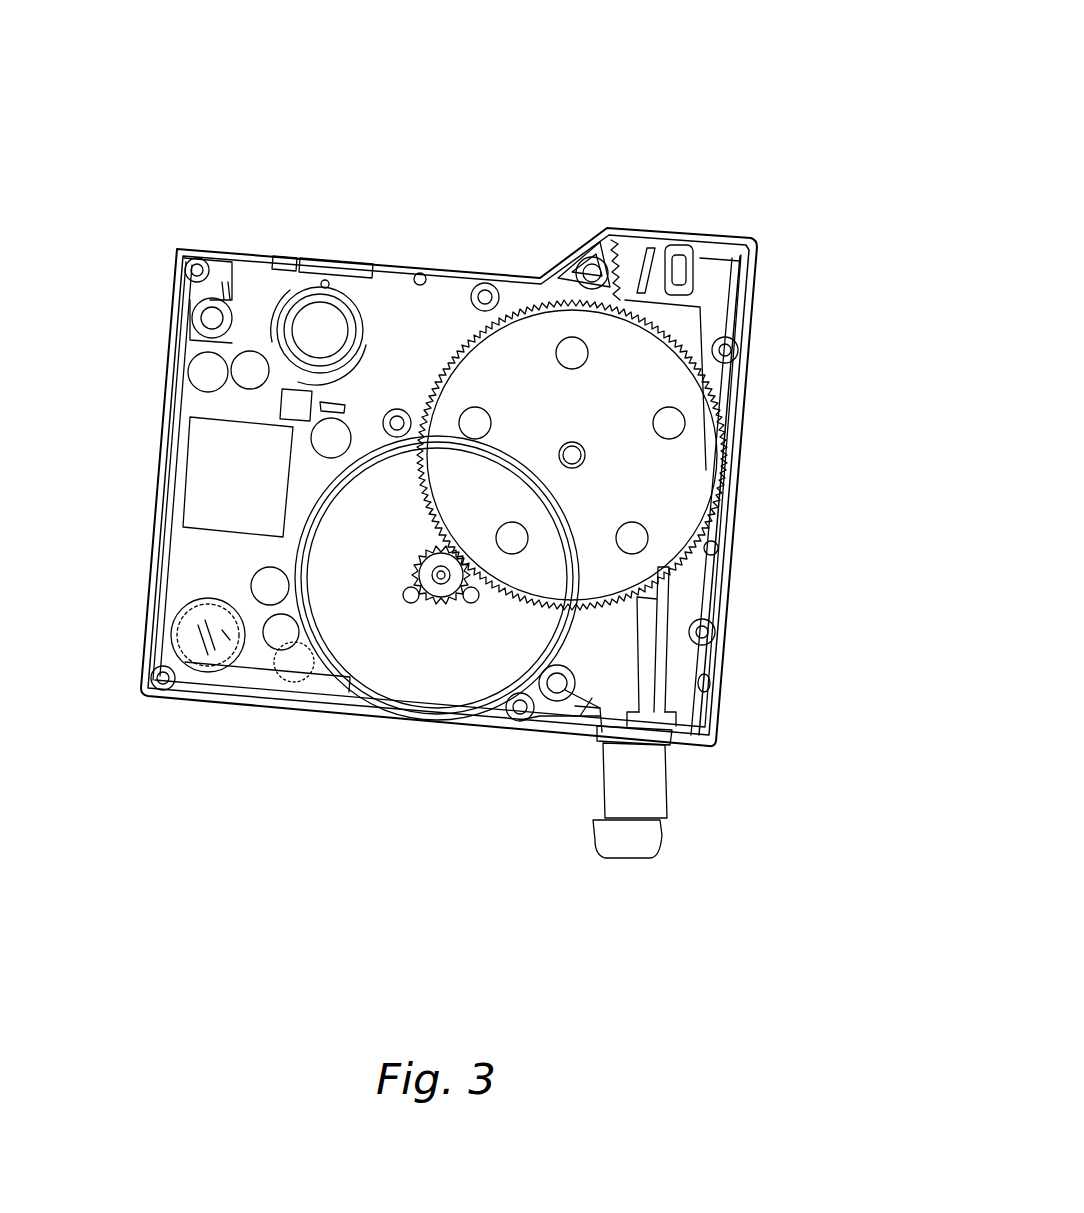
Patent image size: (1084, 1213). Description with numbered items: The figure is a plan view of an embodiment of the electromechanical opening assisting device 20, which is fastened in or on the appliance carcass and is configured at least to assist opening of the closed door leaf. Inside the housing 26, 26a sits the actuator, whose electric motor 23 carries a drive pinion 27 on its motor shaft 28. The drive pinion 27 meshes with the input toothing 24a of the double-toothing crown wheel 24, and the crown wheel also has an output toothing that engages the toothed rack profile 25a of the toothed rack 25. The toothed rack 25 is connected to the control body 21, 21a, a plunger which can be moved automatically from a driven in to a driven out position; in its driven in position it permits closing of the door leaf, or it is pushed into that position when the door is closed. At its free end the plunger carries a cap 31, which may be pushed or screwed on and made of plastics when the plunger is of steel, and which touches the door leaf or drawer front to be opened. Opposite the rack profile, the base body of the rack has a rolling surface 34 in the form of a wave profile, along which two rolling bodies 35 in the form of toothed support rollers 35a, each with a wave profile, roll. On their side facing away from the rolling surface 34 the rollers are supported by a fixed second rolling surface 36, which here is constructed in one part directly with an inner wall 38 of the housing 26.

The electromechanical opening assisting device 20 is at (663, 184).
The control body 21 is at (640, 690).
The piston rod end 21a is at (651, 719).
The electric motor 23 is at (410, 668).
The double-toothing crown wheel 24 is at (623, 465).
The input toothing 24a is at (680, 567).
The toothed rack 25 is at (637, 232).
The toothed rack profile 25a is at (602, 262).
The housing 26 is at (165, 450).
The housing wall 26a is at (725, 239).
The drive pinion 27 is at (412, 578).
The motor shaft 28 is at (444, 584).
The cap 31 is at (633, 848).
The rolling surface 34 is at (713, 303).
The rolling bodies 35 is at (727, 400).
The toothed support rollers 35a is at (711, 496).
The second rolling surface 36 is at (712, 553).
The inner wall 38 is at (713, 685).